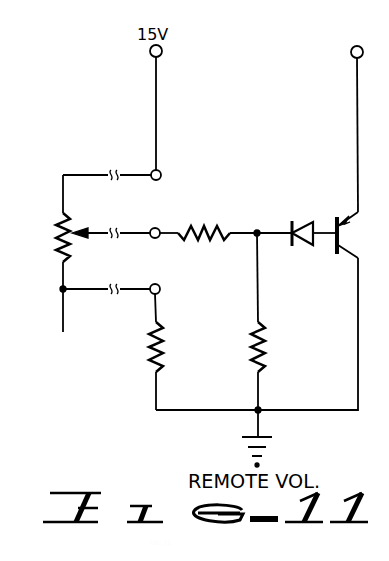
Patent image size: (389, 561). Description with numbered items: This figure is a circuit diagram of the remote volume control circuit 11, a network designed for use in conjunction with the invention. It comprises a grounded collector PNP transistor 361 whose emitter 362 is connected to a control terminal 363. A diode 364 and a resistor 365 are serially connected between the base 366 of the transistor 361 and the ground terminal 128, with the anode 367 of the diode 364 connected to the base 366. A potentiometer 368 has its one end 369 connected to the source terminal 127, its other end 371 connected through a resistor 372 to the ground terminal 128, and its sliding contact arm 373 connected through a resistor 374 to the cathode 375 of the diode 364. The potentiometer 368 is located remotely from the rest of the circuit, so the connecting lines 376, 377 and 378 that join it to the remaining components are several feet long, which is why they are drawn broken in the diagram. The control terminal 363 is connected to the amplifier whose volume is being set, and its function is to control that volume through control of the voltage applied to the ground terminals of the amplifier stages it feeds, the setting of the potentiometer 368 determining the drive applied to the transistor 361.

The remote volume control circuit 11 is at (120, 428).
The source terminal 127 is at (162, 53).
The ground terminal 128 is at (266, 436).
The grounded collector PNP transistor 361 is at (346, 234).
The emitter 362 is at (357, 155).
The control terminal 363 is at (351, 53).
The diode 364 is at (290, 225).
The resistor 365 is at (267, 350).
The base 366 is at (328, 240).
The anode 367 is at (316, 241).
The potentiometer 368 is at (57, 229).
The one end 369 is at (61, 178).
The other end 371 is at (60, 291).
The resistor 372 is at (164, 350).
The sliding contact arm 373 is at (98, 233).
The resistor 374 is at (204, 216).
The cathode 375 is at (260, 229).
The connecting line 376 is at (80, 175).
The connecting line 377 is at (100, 234).
The connecting line 378 is at (89, 292).